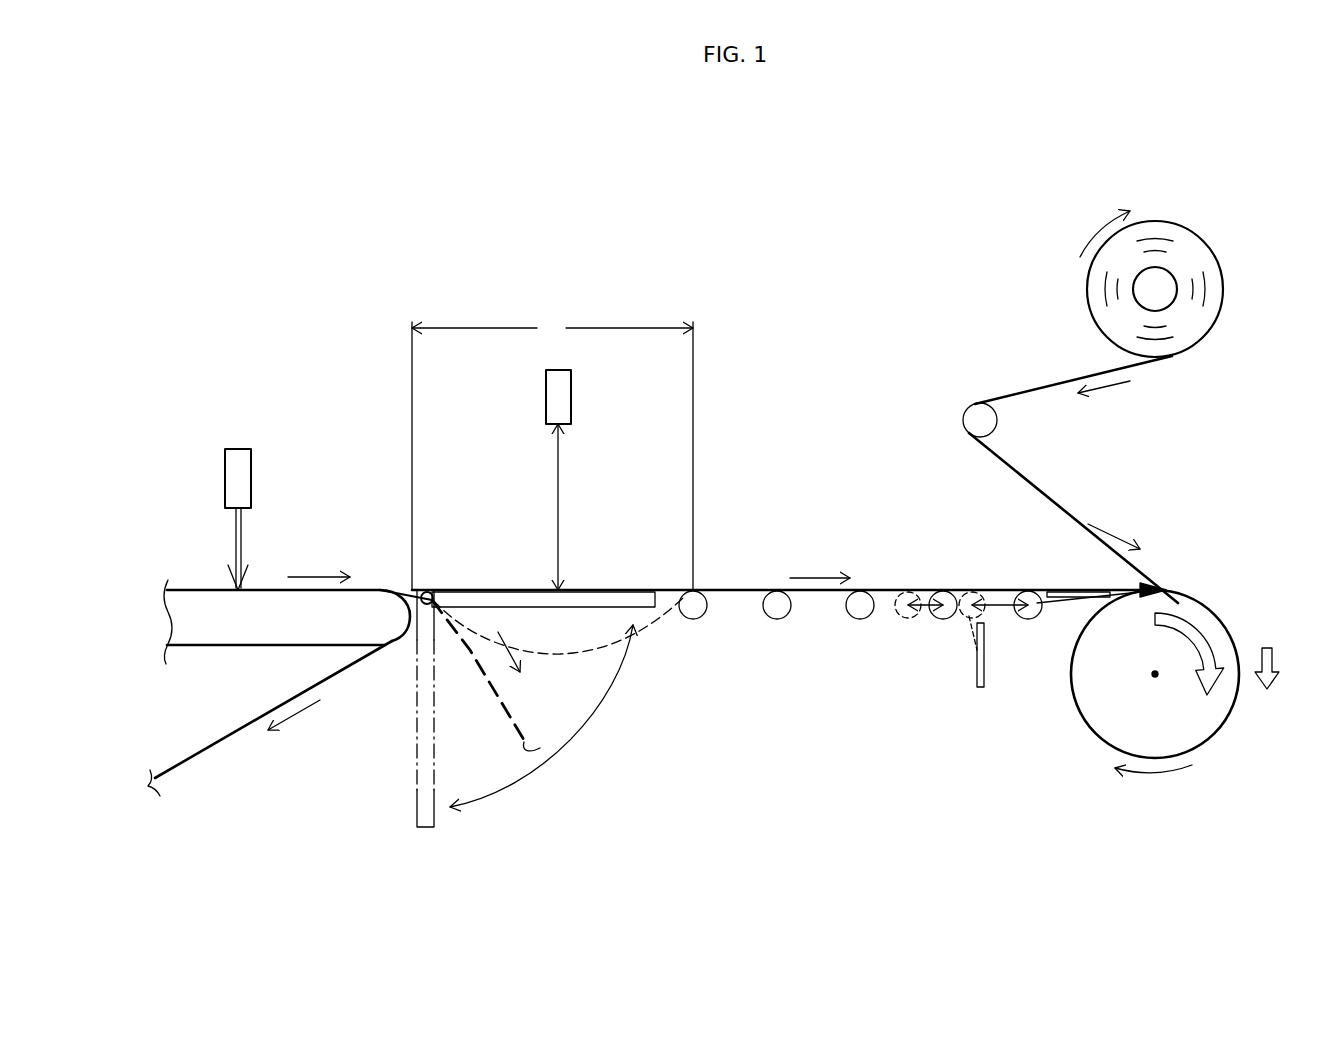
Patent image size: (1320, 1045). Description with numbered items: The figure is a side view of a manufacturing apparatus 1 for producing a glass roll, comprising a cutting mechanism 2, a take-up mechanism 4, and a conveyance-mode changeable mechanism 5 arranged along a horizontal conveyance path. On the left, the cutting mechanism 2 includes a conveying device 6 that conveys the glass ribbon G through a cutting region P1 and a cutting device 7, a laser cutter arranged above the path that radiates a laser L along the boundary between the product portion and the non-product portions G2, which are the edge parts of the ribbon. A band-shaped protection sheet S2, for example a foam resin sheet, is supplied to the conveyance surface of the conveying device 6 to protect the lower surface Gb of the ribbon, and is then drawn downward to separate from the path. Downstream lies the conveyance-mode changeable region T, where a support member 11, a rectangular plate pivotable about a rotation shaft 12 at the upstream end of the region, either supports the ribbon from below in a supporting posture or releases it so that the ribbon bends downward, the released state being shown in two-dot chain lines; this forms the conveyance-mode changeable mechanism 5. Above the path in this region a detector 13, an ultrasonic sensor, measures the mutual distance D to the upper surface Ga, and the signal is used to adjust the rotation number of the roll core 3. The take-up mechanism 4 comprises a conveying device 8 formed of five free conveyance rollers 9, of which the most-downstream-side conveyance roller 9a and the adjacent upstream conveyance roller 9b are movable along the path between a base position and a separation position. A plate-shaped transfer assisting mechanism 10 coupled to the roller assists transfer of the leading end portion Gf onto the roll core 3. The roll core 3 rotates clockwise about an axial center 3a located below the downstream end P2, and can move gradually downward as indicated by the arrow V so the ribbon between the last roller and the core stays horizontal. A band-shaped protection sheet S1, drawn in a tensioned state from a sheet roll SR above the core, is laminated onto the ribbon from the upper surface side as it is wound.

The manufacturing apparatus 1 is at (631, 187).
The cutting mechanism 2 is at (236, 416).
The roll core 3 is at (1196, 724).
The axial center 3a is at (1152, 675).
The take-up mechanism 4 is at (1158, 502).
The conveyance-mode changeable mechanism 5 is at (622, 746).
The conveying device 6 is at (221, 647).
The cutting device 7 is at (232, 480).
The conveying device 8 is at (1052, 731).
The conveyance rollers 9 is at (693, 619).
The most-downstream-side conveyance roller 9a is at (1028, 619).
The conveyance roller 9b is at (943, 619).
The transfer assisting mechanism 10 is at (1080, 606).
The support member 11 is at (614, 591).
The rotation shaft 12 is at (428, 591).
The detector 13 is at (562, 392).
The laser L is at (236, 540).
The mutual distance D is at (568, 507).
The conveyance-mode changeable region T is at (552, 453).
The band-shaped protection sheet S1 is at (1032, 480).
The band-shaped protection sheet S2 is at (224, 740).
The sheet roll SR is at (1186, 232).
The cutting region P1 is at (264, 552).
The downstream end P2 is at (1142, 578).
The glass ribbon G is at (738, 590).
The non-product portions G2 is at (453, 624).
The upper surface Ga is at (882, 628).
The lower surface Gb is at (883, 640).
The leading end portion Gf is at (1158, 590).
The arrow V is at (1273, 668).